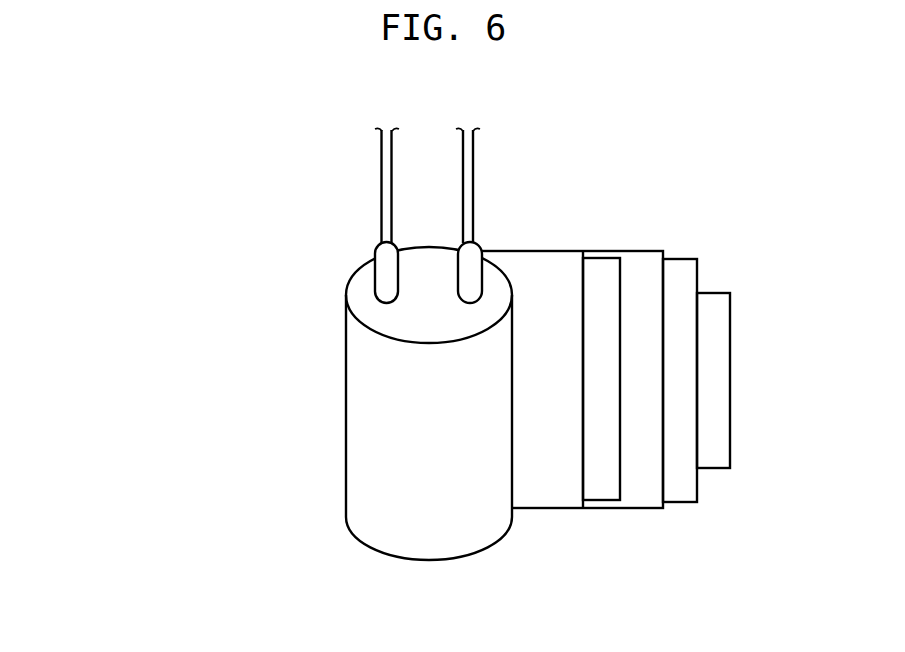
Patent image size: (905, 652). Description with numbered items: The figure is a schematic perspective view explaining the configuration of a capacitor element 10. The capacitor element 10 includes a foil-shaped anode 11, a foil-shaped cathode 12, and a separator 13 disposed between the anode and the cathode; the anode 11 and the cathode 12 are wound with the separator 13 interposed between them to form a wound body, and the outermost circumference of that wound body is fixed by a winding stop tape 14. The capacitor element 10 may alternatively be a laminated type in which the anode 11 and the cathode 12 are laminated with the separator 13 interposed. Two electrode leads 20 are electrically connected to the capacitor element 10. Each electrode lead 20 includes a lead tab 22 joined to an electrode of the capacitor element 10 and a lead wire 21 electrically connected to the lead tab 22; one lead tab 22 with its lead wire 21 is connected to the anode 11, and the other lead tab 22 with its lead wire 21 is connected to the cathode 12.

The capacitor element 10 is at (604, 447).
The anode 11 is at (605, 487).
The cathode 12 is at (680, 488).
The separator 13 is at (553, 492).
The winding stop tape 14 is at (736, 444).
The electrode lead 20 is at (422, 209).
The lead wire 21 is at (381, 155).
The lead tab 22 is at (383, 255).